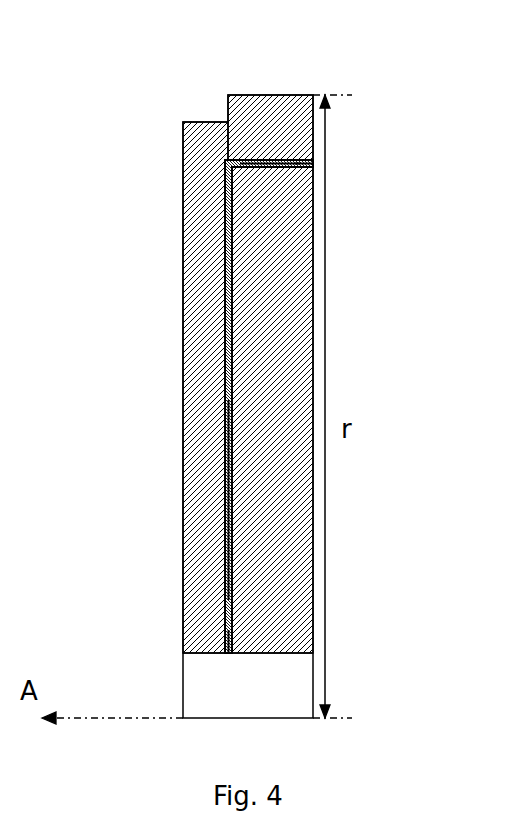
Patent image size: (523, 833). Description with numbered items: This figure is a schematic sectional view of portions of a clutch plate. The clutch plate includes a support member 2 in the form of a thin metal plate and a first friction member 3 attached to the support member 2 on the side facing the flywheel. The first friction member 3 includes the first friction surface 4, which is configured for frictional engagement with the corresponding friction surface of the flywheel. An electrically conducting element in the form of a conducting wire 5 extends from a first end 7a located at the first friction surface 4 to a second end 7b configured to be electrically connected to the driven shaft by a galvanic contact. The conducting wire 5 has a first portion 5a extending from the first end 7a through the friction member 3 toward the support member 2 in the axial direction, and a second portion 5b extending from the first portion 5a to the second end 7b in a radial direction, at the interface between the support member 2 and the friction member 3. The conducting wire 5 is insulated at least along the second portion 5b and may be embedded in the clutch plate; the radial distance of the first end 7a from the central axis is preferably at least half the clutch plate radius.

The support member 2 is at (188, 121).
The first friction member 3 is at (279, 106).
The first friction surface 4 is at (313, 372).
The conducting wire 5 is at (228, 210).
The first portion 5a is at (267, 160).
The second portion 5b is at (228, 488).
The first end 7a is at (313, 162).
The second end 7b is at (228, 653).